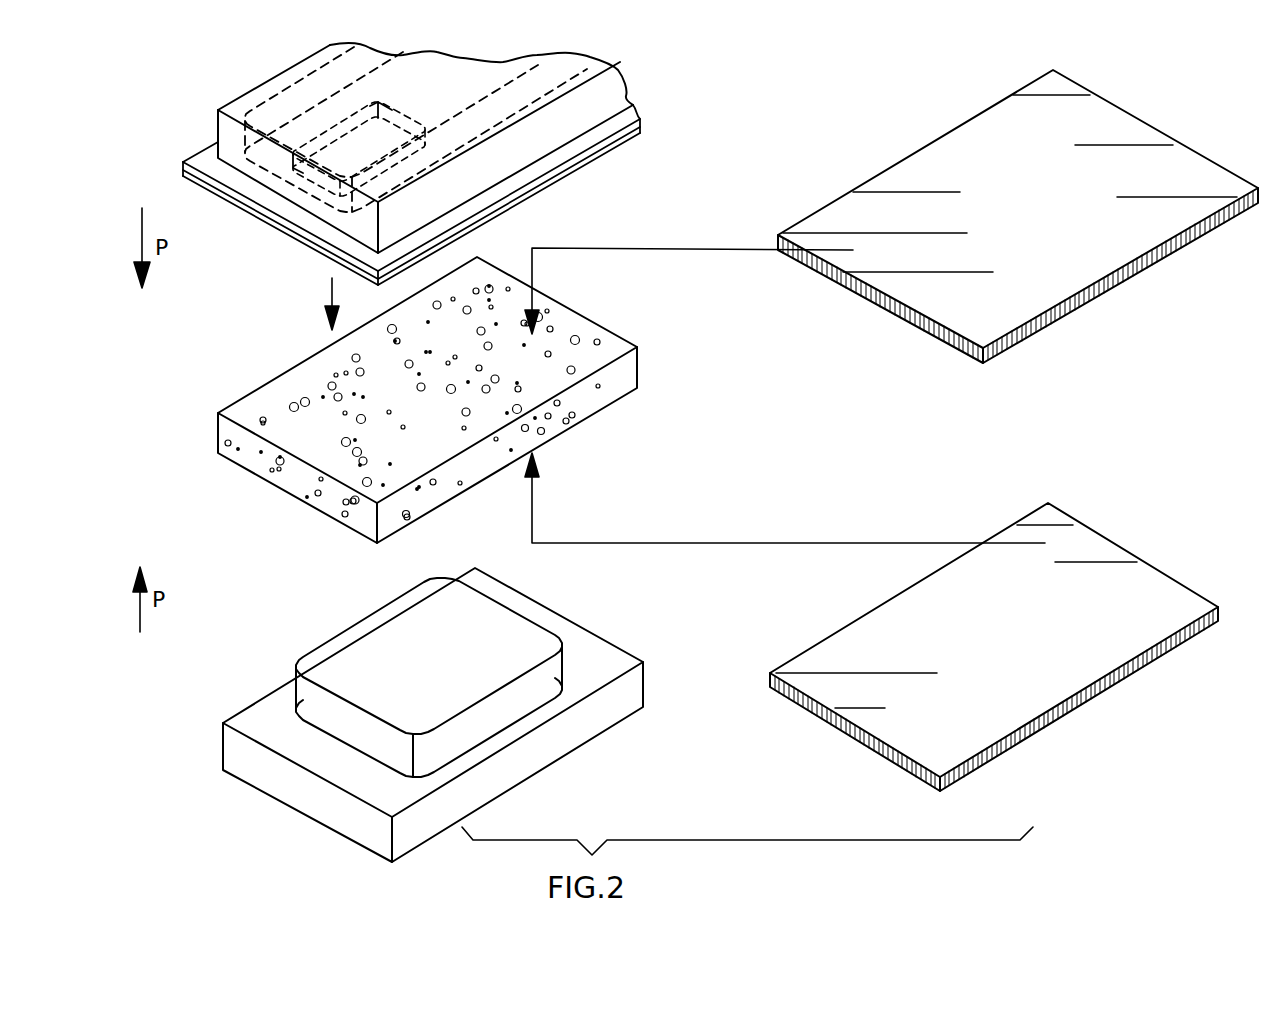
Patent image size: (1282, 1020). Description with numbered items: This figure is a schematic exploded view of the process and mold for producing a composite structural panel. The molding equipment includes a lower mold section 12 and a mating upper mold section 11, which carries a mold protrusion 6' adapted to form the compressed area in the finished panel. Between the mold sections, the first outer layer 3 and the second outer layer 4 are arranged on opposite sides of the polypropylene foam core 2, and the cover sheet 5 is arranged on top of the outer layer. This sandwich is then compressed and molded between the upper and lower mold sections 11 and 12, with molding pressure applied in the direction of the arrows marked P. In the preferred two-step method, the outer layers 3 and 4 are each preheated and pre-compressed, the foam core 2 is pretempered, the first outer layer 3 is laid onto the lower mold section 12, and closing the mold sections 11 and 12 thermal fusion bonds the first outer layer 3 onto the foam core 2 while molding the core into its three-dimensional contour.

The upper mold section 11 is at (230, 130).
The cover sheet 5 is at (578, 157).
The mold protrusion 6' is at (420, 169).
The polypropylene foam core 2 is at (637, 373).
The second outer layer 4 is at (1120, 277).
The first outer layer 3 is at (1097, 552).
The lower mold section 12 is at (550, 745).